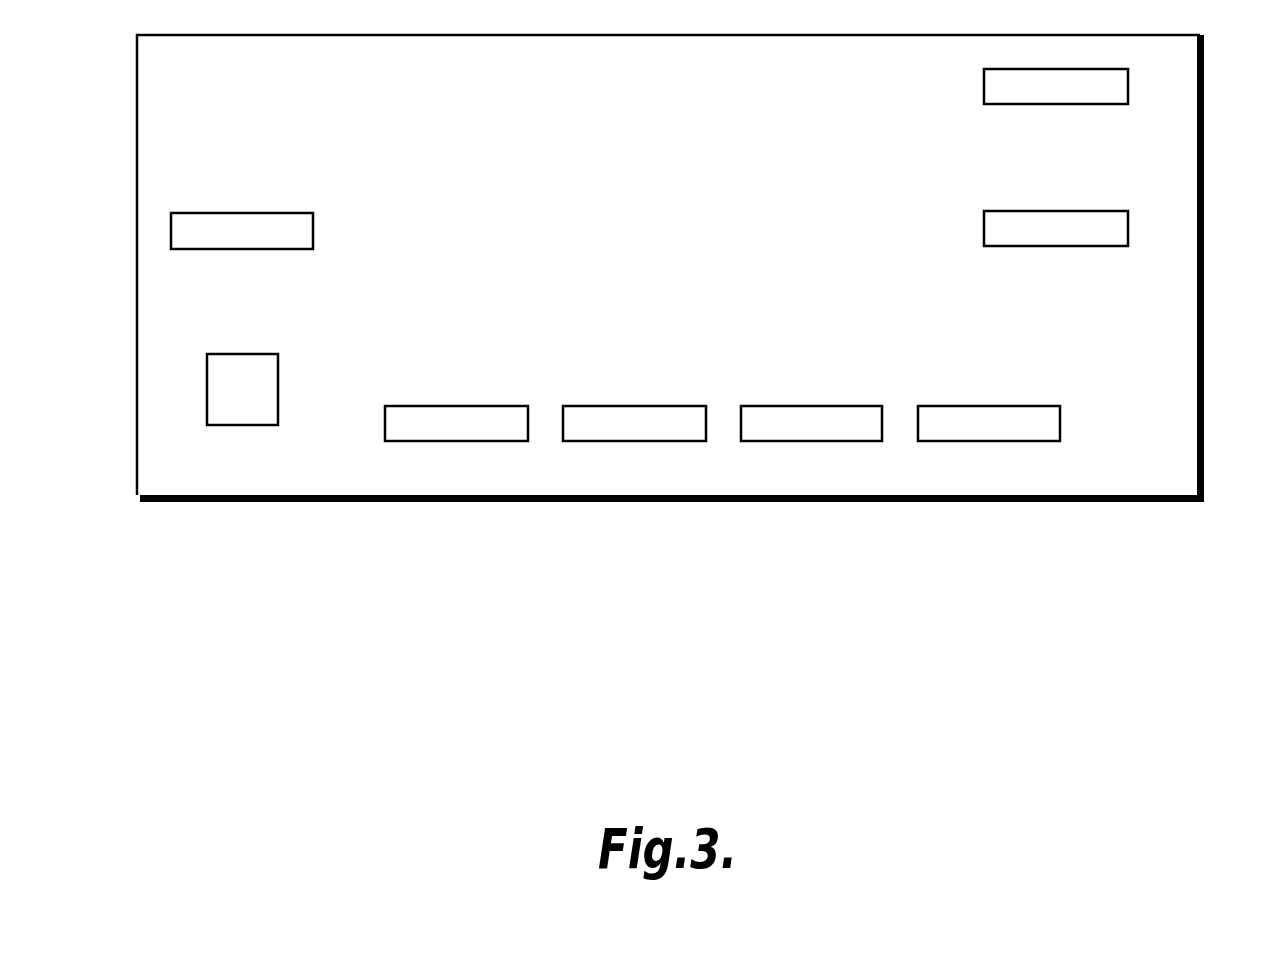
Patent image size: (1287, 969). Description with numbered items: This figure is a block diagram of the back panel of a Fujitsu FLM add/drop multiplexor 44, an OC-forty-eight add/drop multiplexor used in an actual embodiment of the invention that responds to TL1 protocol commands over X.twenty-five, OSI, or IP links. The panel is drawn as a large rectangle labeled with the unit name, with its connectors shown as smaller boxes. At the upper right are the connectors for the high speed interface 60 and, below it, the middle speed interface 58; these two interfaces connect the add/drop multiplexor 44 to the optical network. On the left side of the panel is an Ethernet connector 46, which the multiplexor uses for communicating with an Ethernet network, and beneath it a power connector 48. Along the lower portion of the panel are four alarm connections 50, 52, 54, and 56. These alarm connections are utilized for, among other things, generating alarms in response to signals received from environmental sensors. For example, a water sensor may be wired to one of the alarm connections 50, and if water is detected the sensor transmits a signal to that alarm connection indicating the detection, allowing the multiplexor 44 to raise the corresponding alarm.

The Fujitsu FLM 2400 add/drop multiplexor 44 is at (128, 533).
The Ethernet connector 46 is at (186, 228).
The power connector 48 is at (247, 418).
The alarm connection 50 is at (453, 435).
The alarm connection 52 is at (633, 435).
The alarm connection 54 is at (810, 432).
The alarm connection 56 is at (987, 430).
The middle speed interface 58 is at (1123, 232).
The high speed interface 60 is at (1112, 84).